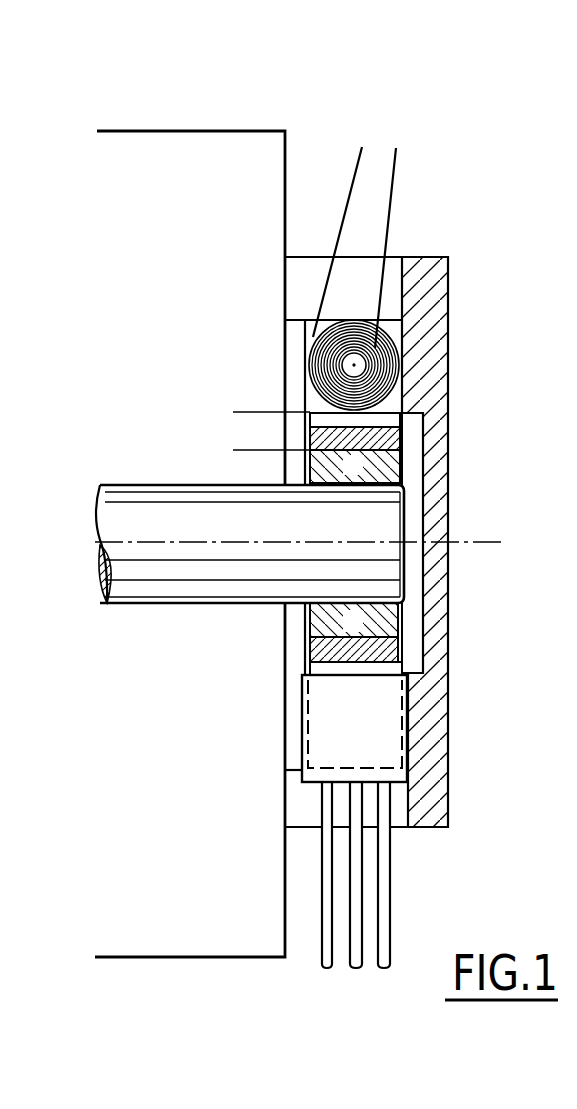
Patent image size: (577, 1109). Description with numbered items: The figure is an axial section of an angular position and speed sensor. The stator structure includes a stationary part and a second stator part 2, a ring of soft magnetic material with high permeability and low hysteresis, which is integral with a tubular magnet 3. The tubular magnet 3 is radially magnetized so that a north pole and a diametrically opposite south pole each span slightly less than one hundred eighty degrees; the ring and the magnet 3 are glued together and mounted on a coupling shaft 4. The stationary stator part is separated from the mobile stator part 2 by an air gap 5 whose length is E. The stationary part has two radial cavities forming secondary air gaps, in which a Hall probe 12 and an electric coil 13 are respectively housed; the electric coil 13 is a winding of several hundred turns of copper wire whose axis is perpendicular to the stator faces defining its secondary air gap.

The second stator part 2 is at (387, 463).
The tubular magnet 3 is at (395, 650).
The coupling shaft 4 is at (383, 526).
The air gap 5 is at (263, 428).
The Hall probe 12 is at (380, 735).
The electric coil 13 is at (354, 365).
The length of the air gap E is at (243, 392).